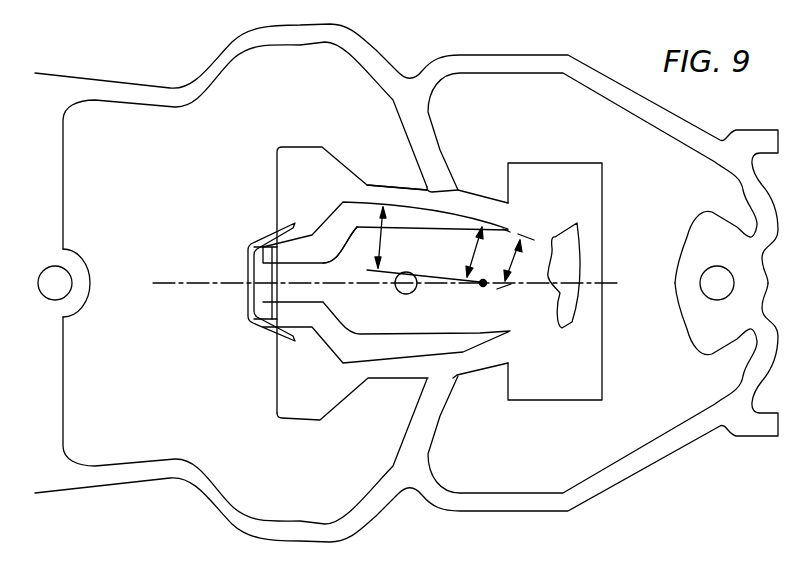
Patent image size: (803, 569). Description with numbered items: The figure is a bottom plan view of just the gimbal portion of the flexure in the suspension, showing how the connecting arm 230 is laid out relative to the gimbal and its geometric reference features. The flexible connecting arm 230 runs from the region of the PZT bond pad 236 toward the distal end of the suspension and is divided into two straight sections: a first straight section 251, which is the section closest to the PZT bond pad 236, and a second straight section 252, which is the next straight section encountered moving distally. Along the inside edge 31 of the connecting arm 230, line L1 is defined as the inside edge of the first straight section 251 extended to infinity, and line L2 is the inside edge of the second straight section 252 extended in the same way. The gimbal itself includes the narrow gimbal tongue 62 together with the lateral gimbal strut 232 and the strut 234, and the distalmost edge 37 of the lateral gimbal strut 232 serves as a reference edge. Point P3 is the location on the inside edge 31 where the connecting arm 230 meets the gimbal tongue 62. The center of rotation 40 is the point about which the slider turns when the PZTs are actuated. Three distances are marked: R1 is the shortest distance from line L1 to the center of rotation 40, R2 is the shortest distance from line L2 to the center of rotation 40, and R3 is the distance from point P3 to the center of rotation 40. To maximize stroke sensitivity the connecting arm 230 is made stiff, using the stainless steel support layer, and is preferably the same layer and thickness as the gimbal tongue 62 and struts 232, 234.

The strut 234 is at (660, 457).
The PZT bond pad 236 is at (302, 163).
The distalmost edge of lateral gimbal strut 37 is at (440, 140).
The lateral gimbal strut 232 is at (443, 415).
The first straight section 251 is at (377, 188).
The second straight section 252 is at (482, 210).
The line L1 is at (398, 206).
The line L2 is at (497, 230).
The connecting arm 230 is at (368, 406).
The gimbal tongue 62 is at (335, 293).
The point P3 is at (510, 232).
The distance R1 is at (377, 237).
The inside edge 31 is at (396, 237).
The distance R2 is at (475, 246).
The distance R3 is at (513, 262).
The center of rotation 40 is at (483, 287).